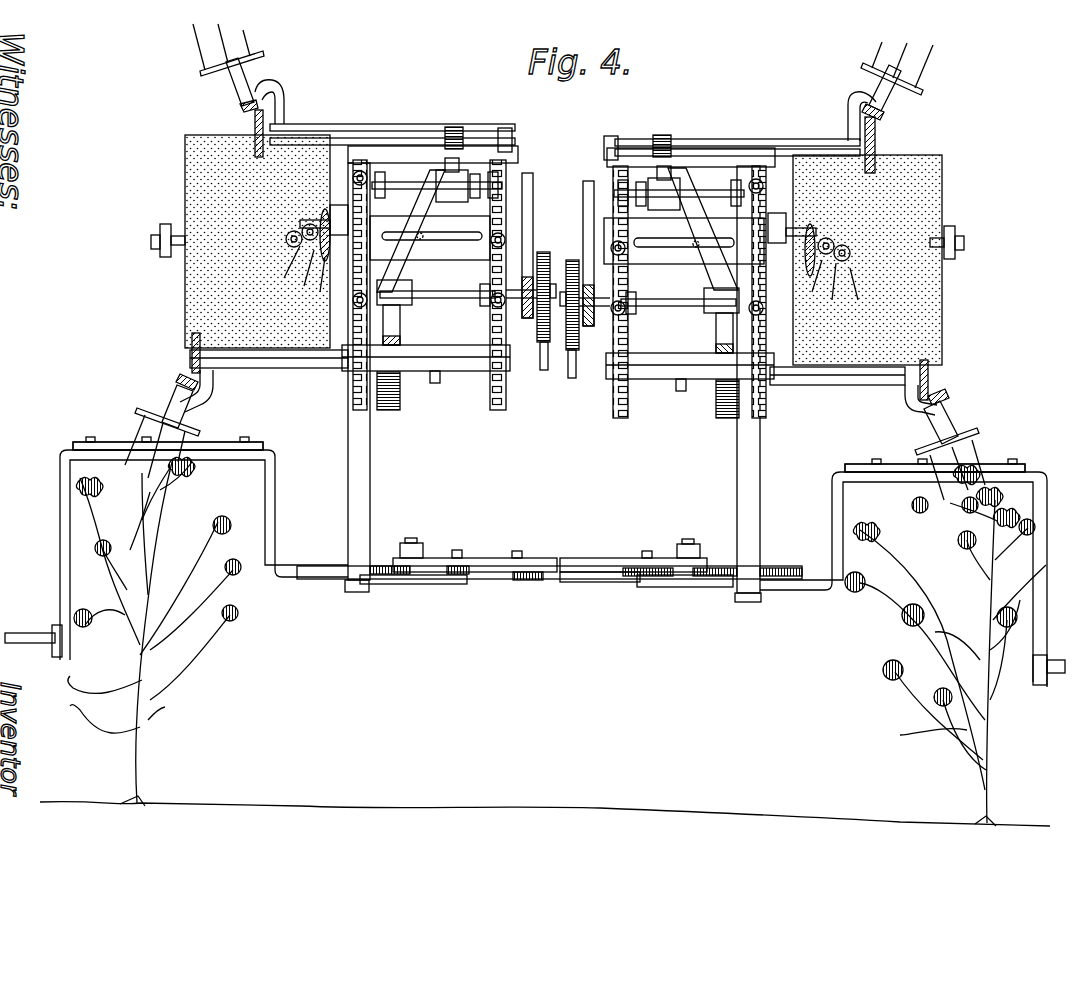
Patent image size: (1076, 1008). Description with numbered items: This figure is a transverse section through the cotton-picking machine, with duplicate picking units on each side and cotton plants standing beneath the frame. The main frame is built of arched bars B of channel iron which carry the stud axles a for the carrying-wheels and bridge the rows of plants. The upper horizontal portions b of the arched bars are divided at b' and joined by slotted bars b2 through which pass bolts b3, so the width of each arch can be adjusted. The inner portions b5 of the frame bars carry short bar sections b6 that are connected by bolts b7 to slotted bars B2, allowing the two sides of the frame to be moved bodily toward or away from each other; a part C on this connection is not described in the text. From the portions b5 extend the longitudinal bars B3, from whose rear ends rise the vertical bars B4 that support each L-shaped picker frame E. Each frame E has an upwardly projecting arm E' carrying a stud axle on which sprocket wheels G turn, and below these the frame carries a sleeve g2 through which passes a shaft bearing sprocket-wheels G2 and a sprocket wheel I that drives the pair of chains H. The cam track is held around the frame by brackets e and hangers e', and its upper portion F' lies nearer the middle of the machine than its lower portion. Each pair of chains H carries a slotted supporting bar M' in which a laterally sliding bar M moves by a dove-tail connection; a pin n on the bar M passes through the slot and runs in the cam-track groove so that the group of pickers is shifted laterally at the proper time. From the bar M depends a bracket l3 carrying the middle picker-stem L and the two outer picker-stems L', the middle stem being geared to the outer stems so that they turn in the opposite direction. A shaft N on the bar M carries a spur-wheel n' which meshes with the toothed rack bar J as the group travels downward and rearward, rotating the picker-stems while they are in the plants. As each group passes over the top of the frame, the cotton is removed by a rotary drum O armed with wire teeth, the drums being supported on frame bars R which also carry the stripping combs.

The outer picker-stem L' is at (532, 251).
The bracket l3 is at (272, 84).
The shaft N is at (370, 130).
The spur-wheel n' is at (561, 125).
The laterally sliding bar M is at (558, 200).
The sprocket wheels G is at (356, 176).
The supporting bar M' is at (558, 312).
The brackets e is at (558, 197).
The upwardly projecting arm E' is at (558, 249).
The hangers e' is at (558, 302).
The sleeve g2 is at (478, 292).
The sprocket-wheels G2 is at (358, 308).
The pin n is at (558, 331).
The L-shaped frame E is at (552, 301).
The sprocket wheel I is at (542, 345).
The sprocket chains H is at (497, 410).
The rack bar J is at (390, 410).
The upper portion of cam track F' is at (557, 232).
The rotary drum O is at (190, 170).
The frame bars R is at (163, 228).
The arched bars B is at (1054, 620).
The stud axles a is at (36, 643).
The upper horizontal portions b is at (549, 470).
The slotted bars b2 is at (230, 446).
The bolts b3 is at (256, 450).
The vertical bars B4 is at (352, 484).
The longitudinal bars B3 is at (355, 592).
The slotted bars B2 is at (552, 566).
The inner portions b5 is at (446, 586).
The short bar sections b6 is at (520, 582).
The bolts b7 is at (516, 550).
The block C is at (416, 550).
The division point b' is at (988, 449).
The middle picker-stem L is at (982, 444).